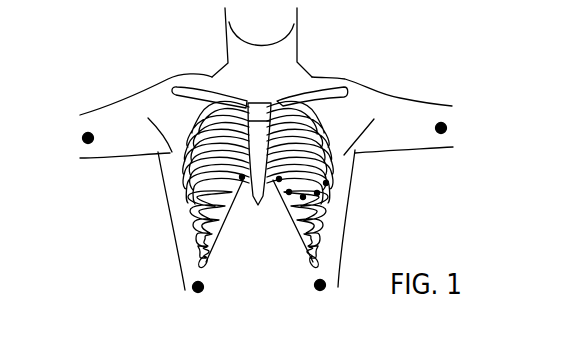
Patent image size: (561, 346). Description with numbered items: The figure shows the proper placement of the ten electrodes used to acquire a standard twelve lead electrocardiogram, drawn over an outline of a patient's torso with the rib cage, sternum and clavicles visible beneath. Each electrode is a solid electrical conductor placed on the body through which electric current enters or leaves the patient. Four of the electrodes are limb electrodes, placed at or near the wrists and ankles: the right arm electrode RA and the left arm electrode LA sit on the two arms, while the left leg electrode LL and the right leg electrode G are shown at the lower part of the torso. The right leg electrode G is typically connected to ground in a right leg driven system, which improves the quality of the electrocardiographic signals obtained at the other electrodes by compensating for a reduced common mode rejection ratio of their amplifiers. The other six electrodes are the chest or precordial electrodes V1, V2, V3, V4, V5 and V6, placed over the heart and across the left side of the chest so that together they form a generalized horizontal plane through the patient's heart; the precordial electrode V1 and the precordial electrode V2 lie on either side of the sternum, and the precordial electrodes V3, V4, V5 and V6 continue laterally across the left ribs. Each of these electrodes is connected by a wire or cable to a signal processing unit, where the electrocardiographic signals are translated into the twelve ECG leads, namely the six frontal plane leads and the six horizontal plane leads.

The right arm electrode RA is at (69, 139).
The left arm electrode LA is at (458, 129).
The right leg electrode G is at (196, 304).
The left leg electrode LL is at (323, 303).
The precordial electrode V1 is at (243, 180).
The precordial electrode V2 is at (279, 182).
The precordial electrode V3 is at (289, 195).
The precordial electrode V4 is at (305, 197).
The precordial electrode V5 is at (319, 193).
The precordial electrode V6 is at (328, 182).